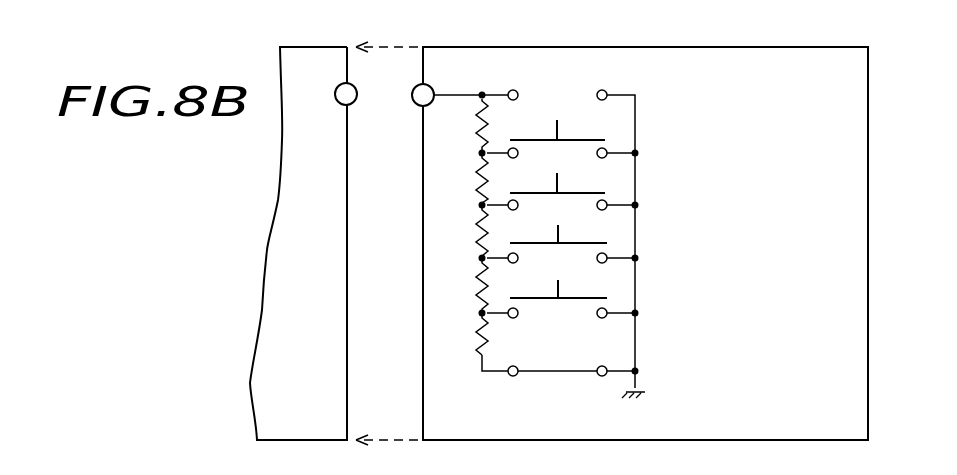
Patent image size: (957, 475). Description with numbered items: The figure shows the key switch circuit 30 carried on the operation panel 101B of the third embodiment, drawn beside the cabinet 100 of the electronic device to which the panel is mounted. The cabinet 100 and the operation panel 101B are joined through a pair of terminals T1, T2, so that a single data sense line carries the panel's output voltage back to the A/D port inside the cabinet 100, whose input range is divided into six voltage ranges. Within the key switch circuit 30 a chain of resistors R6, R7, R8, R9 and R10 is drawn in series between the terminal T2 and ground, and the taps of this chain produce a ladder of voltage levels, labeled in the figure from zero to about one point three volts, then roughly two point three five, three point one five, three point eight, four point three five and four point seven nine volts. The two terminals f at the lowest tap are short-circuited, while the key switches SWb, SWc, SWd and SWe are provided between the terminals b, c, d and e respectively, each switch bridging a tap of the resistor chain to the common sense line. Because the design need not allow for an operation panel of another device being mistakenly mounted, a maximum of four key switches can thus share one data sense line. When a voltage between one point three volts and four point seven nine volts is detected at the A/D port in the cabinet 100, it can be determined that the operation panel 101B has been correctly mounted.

The cabinet 100 is at (322, 57).
The operation panel 101B is at (813, 68).
The terminal of camera body T1 is at (357, 90).
The terminal of operation panel T2 is at (417, 104).
The key switch circuit 30 is at (530, 390).
The resistor R6 is at (472, 128).
The resistor R7 is at (472, 185).
The resistor R8 is at (472, 238).
The resistor R9 is at (472, 293).
The resistor R10 is at (472, 350).
The key switch SWb is at (566, 138).
The key switch SWc is at (566, 192).
The key switch SWd is at (575, 223).
The key switch SWe is at (567, 298).